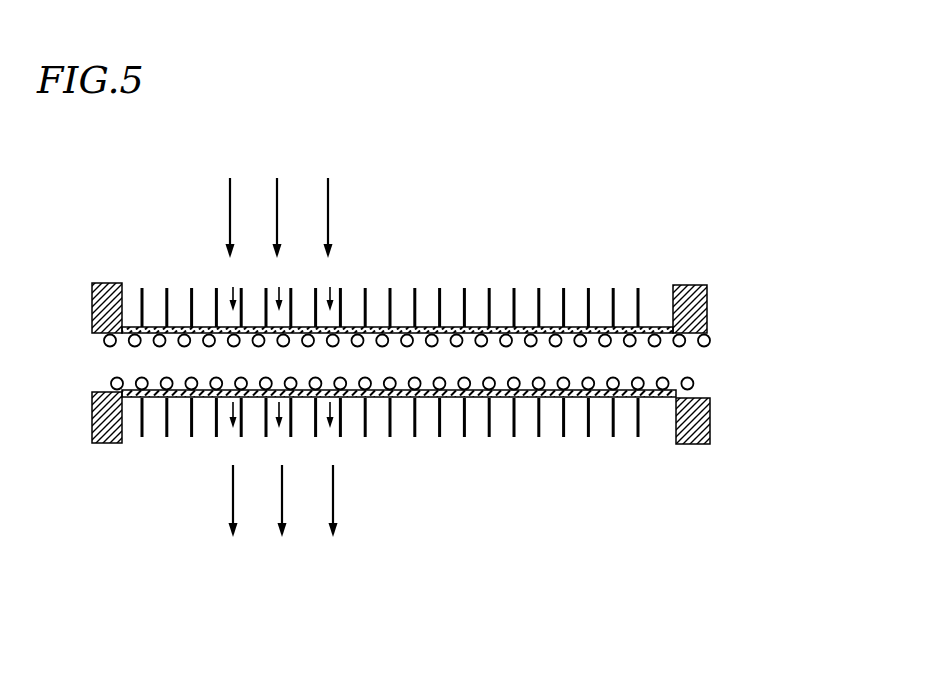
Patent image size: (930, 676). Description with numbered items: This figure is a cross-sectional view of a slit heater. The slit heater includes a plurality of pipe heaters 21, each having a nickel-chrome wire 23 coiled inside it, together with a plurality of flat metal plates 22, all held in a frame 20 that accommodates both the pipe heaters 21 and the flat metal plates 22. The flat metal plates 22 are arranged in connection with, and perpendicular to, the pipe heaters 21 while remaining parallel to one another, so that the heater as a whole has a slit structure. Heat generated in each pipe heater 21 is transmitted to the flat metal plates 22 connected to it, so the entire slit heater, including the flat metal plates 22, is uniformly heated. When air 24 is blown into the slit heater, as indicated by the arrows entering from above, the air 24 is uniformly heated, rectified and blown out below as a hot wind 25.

The frame 20 is at (700, 285).
The pipe heater 21 is at (700, 445).
The flat metal plate 22 is at (595, 435).
The nickel-chrome wire 23 is at (693, 380).
The air 24 is at (333, 197).
The hot wind 25 is at (342, 517).